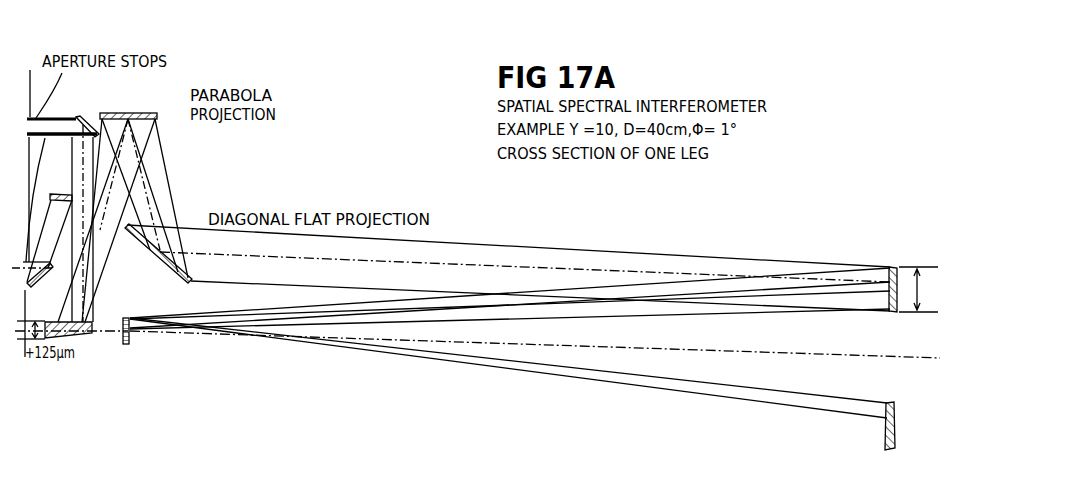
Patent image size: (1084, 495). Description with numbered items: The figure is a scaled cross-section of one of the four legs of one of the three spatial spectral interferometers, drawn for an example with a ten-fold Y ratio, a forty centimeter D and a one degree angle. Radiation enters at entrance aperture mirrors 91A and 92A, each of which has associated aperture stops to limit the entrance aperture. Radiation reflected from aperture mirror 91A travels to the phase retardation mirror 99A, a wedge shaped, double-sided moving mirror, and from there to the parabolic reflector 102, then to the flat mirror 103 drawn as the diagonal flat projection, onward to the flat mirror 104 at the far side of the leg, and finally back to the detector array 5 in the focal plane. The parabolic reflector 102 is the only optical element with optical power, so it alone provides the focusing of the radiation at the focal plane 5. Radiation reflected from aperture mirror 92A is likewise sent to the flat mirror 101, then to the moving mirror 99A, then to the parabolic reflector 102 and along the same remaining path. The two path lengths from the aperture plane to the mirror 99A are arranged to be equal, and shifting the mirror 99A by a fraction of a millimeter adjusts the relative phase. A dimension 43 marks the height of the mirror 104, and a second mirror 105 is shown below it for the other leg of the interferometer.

The entrance aperture mirror 91A is at (86, 104).
The parabolic reflector 102 is at (125, 112).
The flat mirror 101 is at (65, 193).
The flat mirror 103 is at (164, 266).
The entrance aperture mirror 92A is at (60, 319).
The detector array 5 is at (129, 344).
The phase retardation mirror 99A is at (85, 340).
The flat mirror 104 is at (893, 265).
The mirror width dimension 43 is at (921, 289).
The mirror of second leg 105 is at (893, 450).